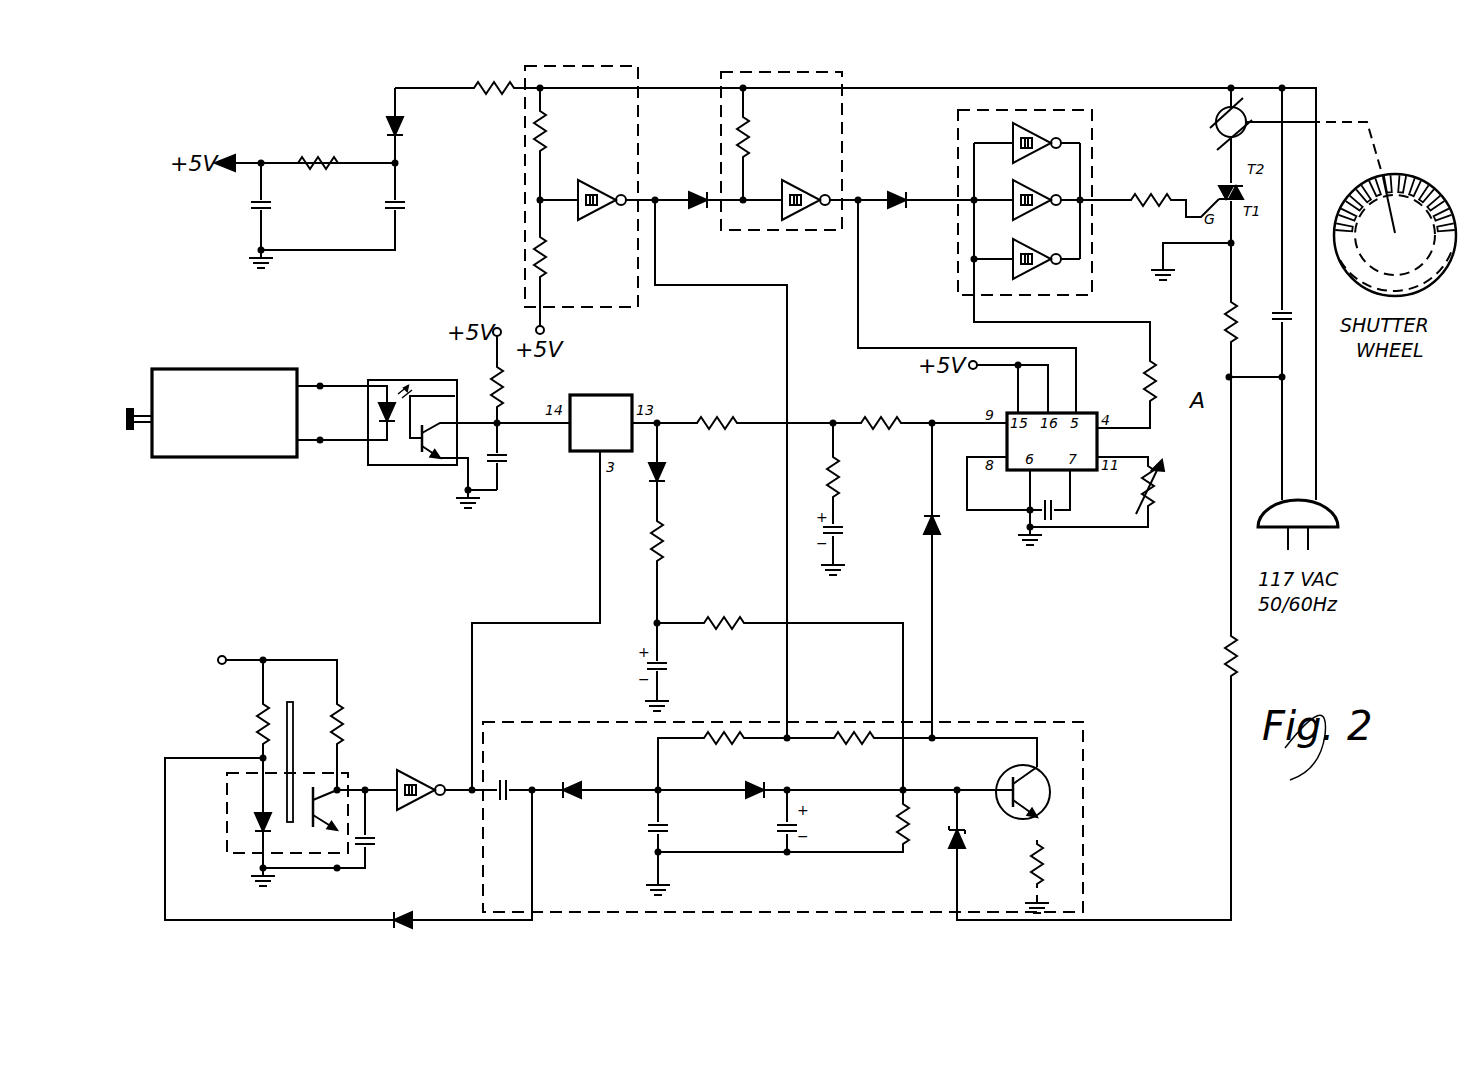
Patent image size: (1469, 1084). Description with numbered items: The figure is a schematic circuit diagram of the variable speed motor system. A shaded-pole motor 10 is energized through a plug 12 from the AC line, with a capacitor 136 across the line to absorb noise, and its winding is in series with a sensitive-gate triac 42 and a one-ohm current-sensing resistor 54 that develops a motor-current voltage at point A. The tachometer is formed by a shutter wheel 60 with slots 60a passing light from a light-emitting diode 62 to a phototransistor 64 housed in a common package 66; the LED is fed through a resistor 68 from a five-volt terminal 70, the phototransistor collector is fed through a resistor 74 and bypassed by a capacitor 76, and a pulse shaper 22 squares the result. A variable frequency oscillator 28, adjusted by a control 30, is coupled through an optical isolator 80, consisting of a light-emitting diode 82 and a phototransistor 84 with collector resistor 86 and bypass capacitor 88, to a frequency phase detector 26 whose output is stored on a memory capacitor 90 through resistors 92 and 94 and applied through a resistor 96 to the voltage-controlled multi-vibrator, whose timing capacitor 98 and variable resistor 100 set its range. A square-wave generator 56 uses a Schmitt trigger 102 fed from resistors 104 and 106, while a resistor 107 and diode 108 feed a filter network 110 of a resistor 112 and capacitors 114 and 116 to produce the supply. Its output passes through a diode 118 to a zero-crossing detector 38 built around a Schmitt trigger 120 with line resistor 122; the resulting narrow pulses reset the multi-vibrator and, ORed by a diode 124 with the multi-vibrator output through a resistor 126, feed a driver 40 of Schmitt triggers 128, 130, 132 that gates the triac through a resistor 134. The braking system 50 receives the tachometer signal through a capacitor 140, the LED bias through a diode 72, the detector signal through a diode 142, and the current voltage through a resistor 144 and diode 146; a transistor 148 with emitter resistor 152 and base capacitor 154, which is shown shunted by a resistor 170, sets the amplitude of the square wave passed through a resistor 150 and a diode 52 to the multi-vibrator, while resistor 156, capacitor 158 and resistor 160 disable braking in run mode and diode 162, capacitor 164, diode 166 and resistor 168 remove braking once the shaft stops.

The motor 10 is at (1215, 128).
The plug 12 is at (1262, 516).
The pulse shaper 22 is at (447, 758).
The frequency phase detector 26 is at (616, 395).
The variable frequency oscillator 28 is at (252, 369).
The control 30 is at (131, 406).
The zero-crossing detector 38 is at (850, 48).
The driver 40 is at (1000, 110).
The triac 42 is at (1222, 186).
The braking system 50 is at (972, 722).
The diode 52 is at (930, 522).
The resistor 54 is at (1228, 322).
The square-wave generator 56 is at (535, 66).
The shutter wheel 60 is at (1366, 285).
The slots 60a is at (1405, 190).
The light-emitting diode 62 is at (250, 830).
The phototransistor 64 is at (320, 828).
The common package 66 is at (228, 862).
The resistor 68 is at (256, 718).
The terminal 70 is at (240, 648).
The diode 72 is at (410, 915).
The resistor 74 is at (343, 720).
The capacitor 76 is at (376, 846).
The optical isolator 80 is at (418, 380).
The light-emitting diode 82 is at (380, 405).
The phototransistor 84 is at (428, 450).
The resistor 86 is at (505, 394).
The radio frequency bypass capacitor 88 is at (507, 458).
The capacitor 90 is at (840, 530).
The resistor 92 is at (840, 484).
The resistor 94 is at (718, 420).
The resistor 96 is at (884, 420).
The timing capacitor 98 is at (1060, 518).
The variable resistor 100 is at (1152, 494).
The Schmitt trigger 102 is at (603, 182).
The resistor 104 is at (548, 135).
The resistor 106 is at (548, 258).
The resistor 107 is at (494, 108).
The diode 108 is at (385, 118).
The filter network 110 is at (305, 205).
The resistor 112 is at (326, 128).
The capacitor 114 is at (250, 205).
The capacitor 116 is at (405, 206).
The diode 118 is at (700, 168).
The Schmitt trigger 120 is at (815, 174).
The resistor 122 is at (750, 148).
The diode 124 is at (907, 172).
The resistor 126 is at (1145, 380).
The Schmitt trigger 128 is at (1035, 128).
The Schmitt trigger 130 is at (1032, 185).
The Schmitt trigger 132 is at (1032, 250).
The resistor 134 is at (1156, 170).
The capacitor 136 is at (1275, 316).
The capacitor 140 is at (501, 780).
The diode 142 is at (665, 470).
The resistor 144 is at (1222, 660).
The diode 146 is at (950, 852).
The transistor 148 is at (1050, 790).
The resistor 150 is at (870, 716).
The resistor 152 is at (1031, 860).
The capacitor 154 is at (780, 828).
The resistor 156 is at (662, 528).
The capacitor 158 is at (664, 666).
The resistor 160 is at (732, 620).
The diode 162 is at (575, 786).
The capacitor 164 is at (649, 830).
The diode 166 is at (757, 784).
The resistor 168 is at (712, 736).
The resistor 170 is at (897, 826).